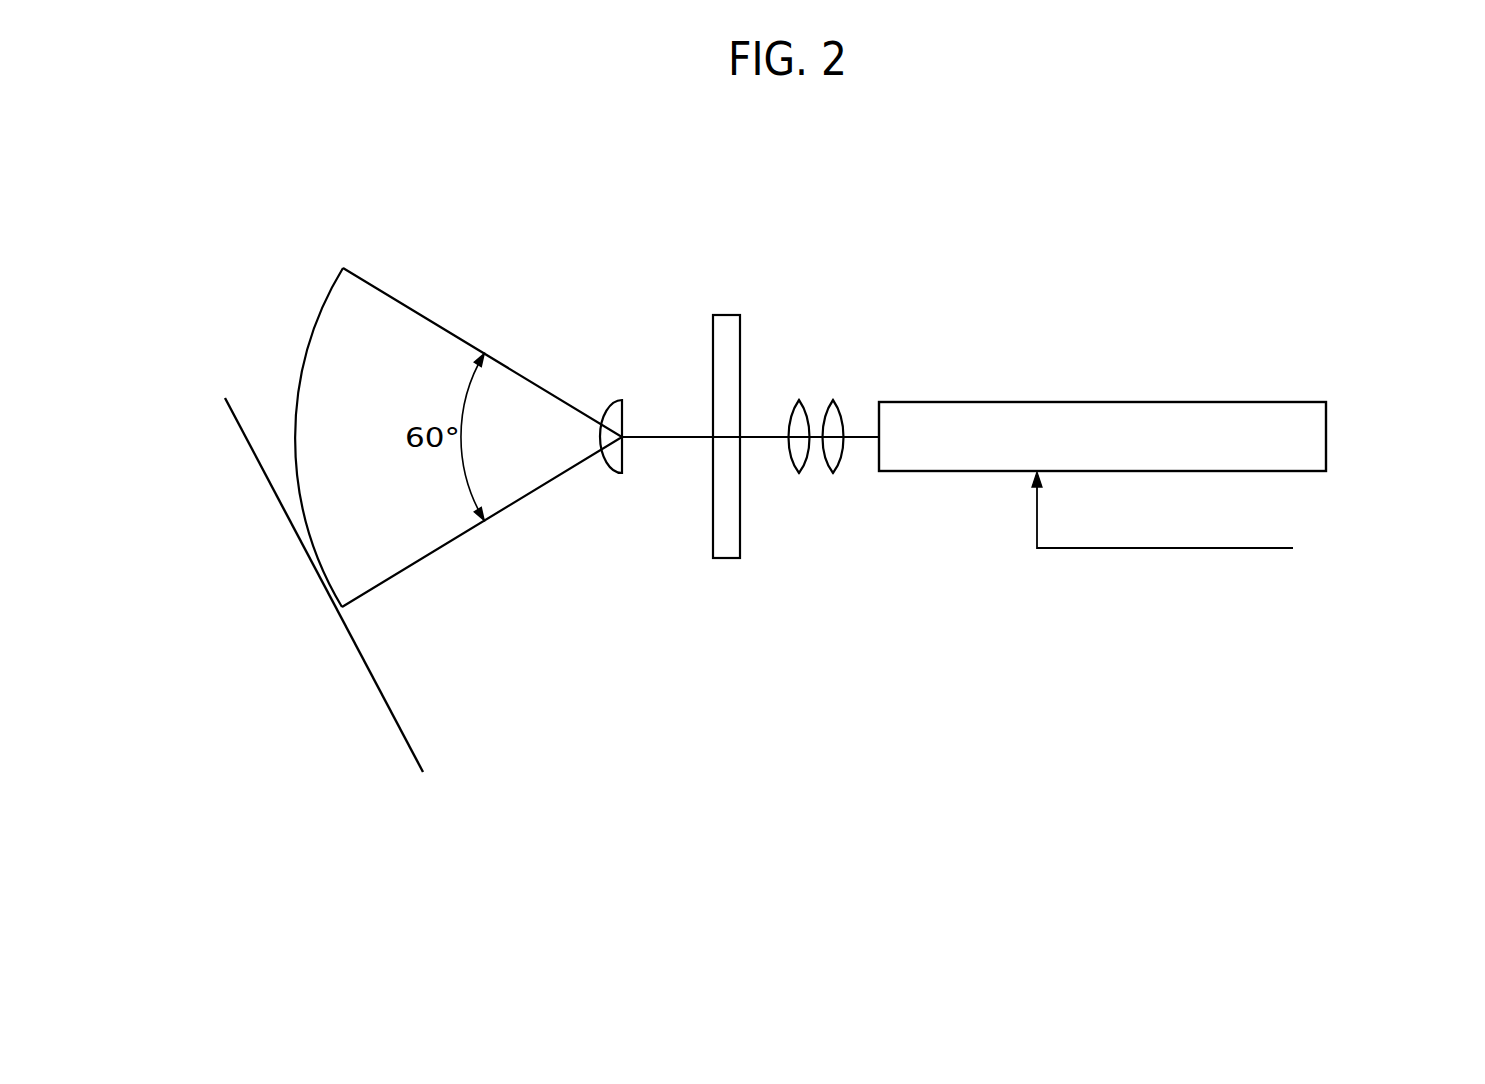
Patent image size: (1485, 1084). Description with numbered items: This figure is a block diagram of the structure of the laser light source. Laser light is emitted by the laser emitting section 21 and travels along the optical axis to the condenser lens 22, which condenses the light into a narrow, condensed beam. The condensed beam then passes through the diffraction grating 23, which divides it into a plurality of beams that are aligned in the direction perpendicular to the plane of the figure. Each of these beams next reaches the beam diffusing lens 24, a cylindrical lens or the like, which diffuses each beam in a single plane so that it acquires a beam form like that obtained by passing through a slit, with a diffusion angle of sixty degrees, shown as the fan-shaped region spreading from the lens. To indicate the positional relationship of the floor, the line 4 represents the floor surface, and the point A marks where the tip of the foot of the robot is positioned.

The laser emitting section 21 is at (1015, 402).
The condenser lens 22 is at (835, 400).
The diffraction grating 23 is at (740, 545).
The beam diffusing lens 24 is at (620, 400).
The line representing the floor surface 4 is at (395, 720).
The point where the tip of the foot of the robot is positioned A is at (331, 613).